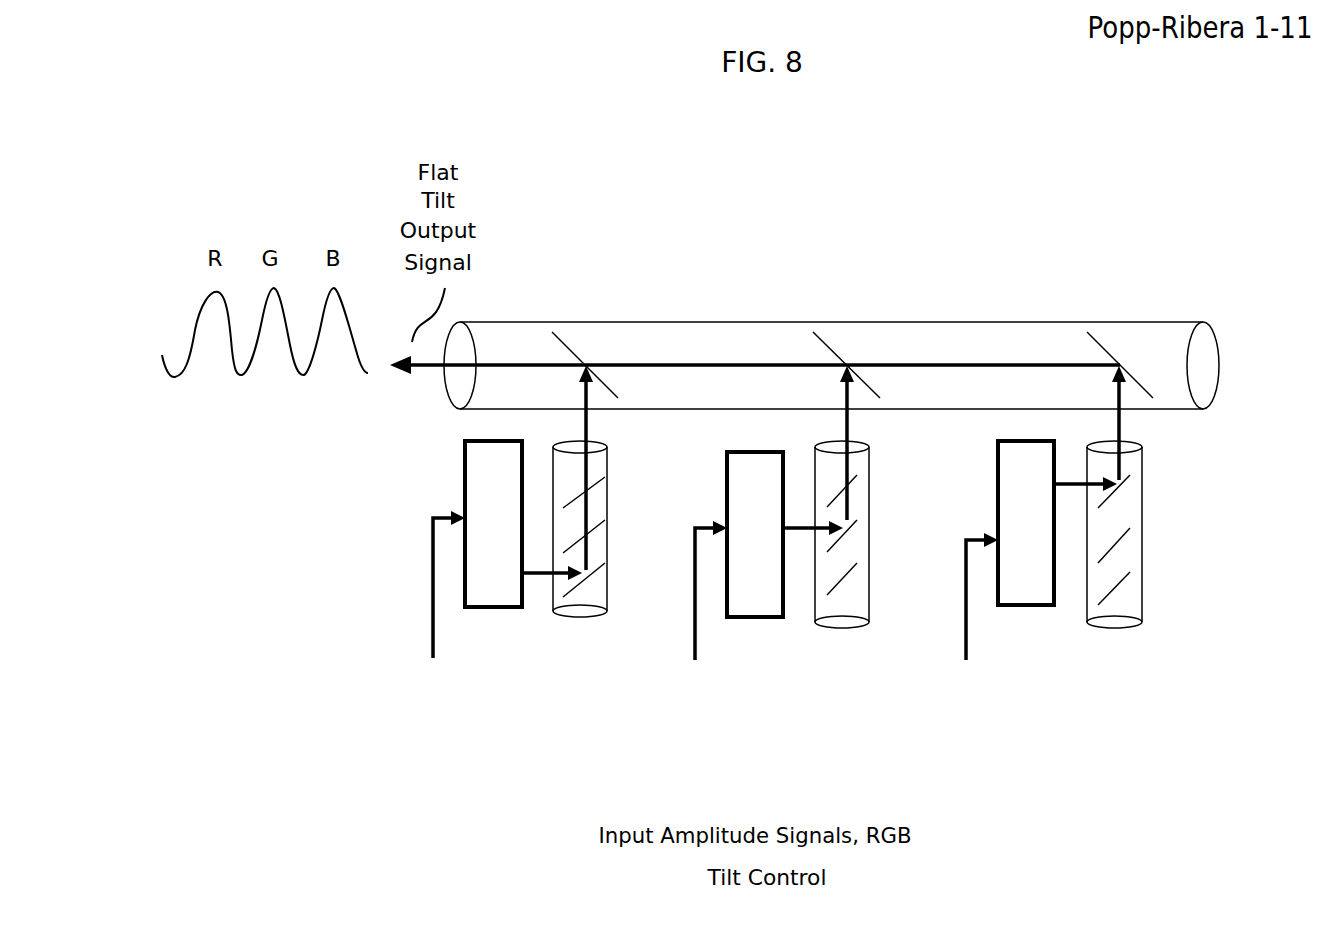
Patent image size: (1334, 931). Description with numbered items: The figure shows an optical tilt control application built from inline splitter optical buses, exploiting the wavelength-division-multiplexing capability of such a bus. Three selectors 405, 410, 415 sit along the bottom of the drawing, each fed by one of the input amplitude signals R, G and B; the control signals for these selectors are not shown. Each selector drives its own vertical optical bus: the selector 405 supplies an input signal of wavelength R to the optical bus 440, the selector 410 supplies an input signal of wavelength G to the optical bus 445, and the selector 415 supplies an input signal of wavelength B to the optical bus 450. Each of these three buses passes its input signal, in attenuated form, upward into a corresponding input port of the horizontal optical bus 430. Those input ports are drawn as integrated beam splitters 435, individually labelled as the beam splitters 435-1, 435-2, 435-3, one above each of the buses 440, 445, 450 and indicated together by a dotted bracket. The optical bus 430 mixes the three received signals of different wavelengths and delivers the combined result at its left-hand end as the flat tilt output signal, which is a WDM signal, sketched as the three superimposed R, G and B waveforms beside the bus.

The selector 405 is at (473, 569).
The selector 410 is at (734, 574).
The selector 415 is at (1006, 569).
The optical bus 430 is at (1185, 310).
The integrated beam splitters 435 is at (852, 300).
The integrated beam splitter 435-1 is at (587, 297).
The integrated beam splitter 435-2 is at (869, 297).
The integrated beam splitter 435-3 is at (1118, 297).
The optical bus 440 is at (620, 518).
The optical bus 445 is at (847, 635).
The optical bus 450 is at (1143, 637).